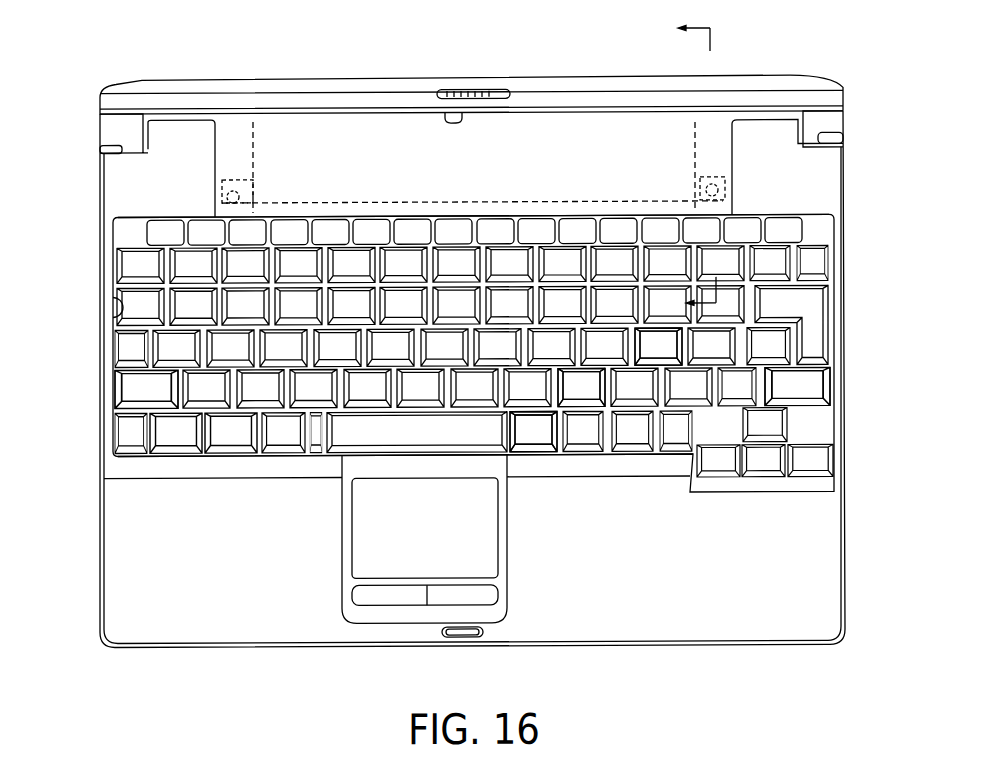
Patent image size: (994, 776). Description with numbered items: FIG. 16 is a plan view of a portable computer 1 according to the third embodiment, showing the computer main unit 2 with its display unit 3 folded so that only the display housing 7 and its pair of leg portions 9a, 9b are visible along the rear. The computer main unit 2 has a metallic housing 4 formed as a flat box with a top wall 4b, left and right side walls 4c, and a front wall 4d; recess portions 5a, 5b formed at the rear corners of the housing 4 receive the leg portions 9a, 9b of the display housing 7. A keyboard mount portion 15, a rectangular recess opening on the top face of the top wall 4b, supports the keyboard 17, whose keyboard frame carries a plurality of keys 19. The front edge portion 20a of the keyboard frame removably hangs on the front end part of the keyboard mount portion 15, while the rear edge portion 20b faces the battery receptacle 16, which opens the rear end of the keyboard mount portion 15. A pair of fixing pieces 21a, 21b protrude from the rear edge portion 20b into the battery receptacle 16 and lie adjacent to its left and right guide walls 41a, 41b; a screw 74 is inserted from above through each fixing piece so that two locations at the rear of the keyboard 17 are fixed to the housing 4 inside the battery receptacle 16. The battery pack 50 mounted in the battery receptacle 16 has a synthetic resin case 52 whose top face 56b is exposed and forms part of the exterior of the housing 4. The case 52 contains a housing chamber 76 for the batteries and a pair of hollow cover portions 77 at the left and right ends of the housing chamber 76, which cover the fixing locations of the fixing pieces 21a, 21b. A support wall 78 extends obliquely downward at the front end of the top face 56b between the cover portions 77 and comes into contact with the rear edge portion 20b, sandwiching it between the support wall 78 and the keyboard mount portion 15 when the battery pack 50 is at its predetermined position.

The portable computer 1 is at (62, 68).
The computer main unit 2 is at (467, 371).
The display unit 3 is at (471, 74).
The housing 4 is at (470, 412).
The top wall 4b is at (770, 201).
The side wall 4c is at (100, 580).
The front wall 4d is at (622, 652).
The recess portion 5a is at (100, 150).
The recess portion 5b is at (822, 140).
The display housing 7 is at (792, 84).
The leg portion 9a is at (112, 131).
The leg portion 9b is at (828, 122).
The keyboard mount portion 15 is at (436, 374).
The battery receptacle 16 is at (222, 134).
The keyboard 17 is at (237, 442).
The keys 19 is at (657, 346).
The front edge portion 20a is at (182, 462).
The rear edge portion 20b is at (187, 211).
The fixing piece 21a is at (243, 175).
The fixing piece 21b is at (690, 176).
The guide wall 41a is at (212, 164).
The guide wall 41b is at (735, 148).
The battery pack 50 is at (550, 126).
The case 52 is at (415, 136).
The top face 56b is at (530, 136).
The screw 74 is at (250, 195).
The housing chamber 76 is at (263, 138).
The cover portion 77 is at (238, 134).
The support wall 78 is at (465, 212).